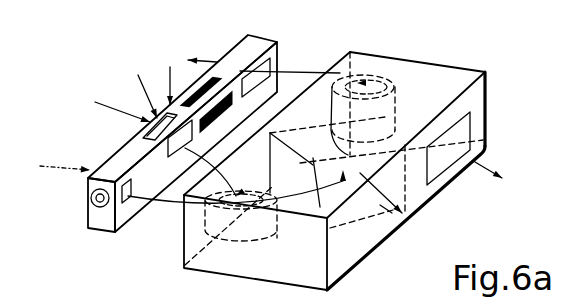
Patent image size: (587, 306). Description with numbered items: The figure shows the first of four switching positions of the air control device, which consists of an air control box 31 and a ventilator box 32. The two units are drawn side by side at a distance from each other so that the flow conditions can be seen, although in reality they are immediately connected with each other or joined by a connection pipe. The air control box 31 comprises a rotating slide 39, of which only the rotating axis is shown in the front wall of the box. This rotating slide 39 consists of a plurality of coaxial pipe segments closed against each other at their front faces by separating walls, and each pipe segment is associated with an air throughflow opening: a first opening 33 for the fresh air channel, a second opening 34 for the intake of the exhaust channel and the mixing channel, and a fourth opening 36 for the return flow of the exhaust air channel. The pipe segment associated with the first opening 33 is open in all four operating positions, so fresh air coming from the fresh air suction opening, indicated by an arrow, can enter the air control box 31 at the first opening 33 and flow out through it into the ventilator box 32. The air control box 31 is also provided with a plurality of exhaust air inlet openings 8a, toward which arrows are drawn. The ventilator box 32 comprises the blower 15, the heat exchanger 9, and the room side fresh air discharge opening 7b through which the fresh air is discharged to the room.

The ventilator box 32 is at (508, 115).
The blower 15 is at (388, 81).
The room side fresh air discharge opening 7b is at (440, 165).
The heat exchanger 9 is at (385, 205).
The air control box 31 is at (95, 238).
The exhaust air inlet openings 8a is at (145, 136).
The fourth opening 36 is at (250, 80).
The second opening 34 is at (172, 142).
The first opening 33 is at (128, 200).
The rotating slide 39 is at (100, 200).